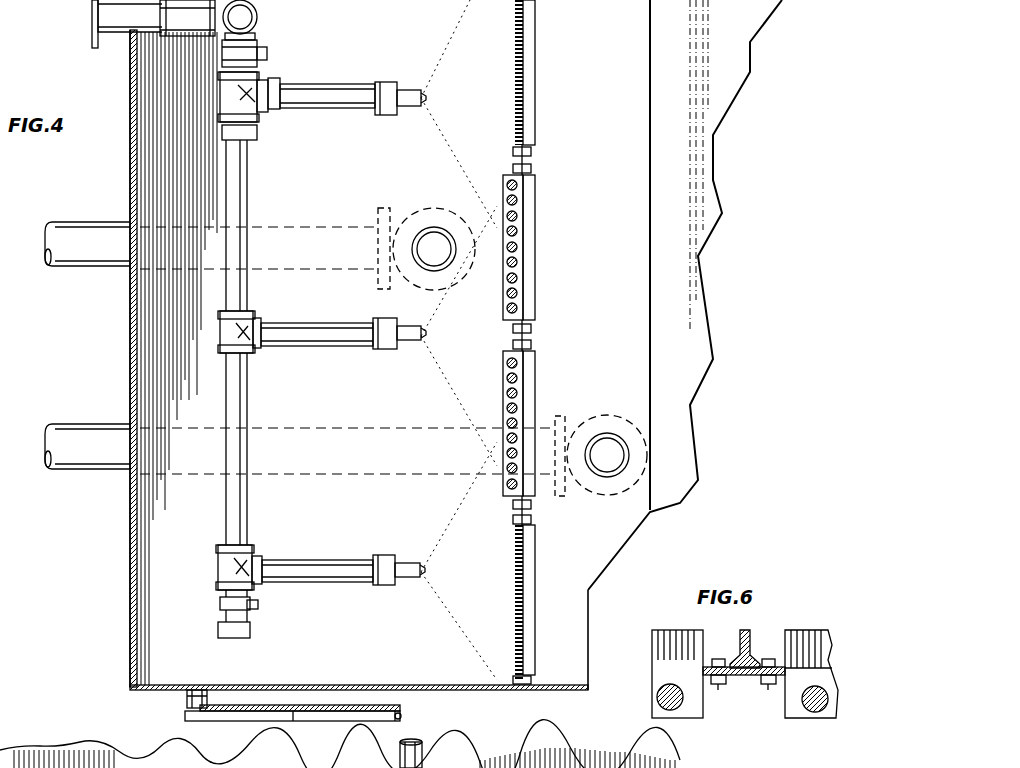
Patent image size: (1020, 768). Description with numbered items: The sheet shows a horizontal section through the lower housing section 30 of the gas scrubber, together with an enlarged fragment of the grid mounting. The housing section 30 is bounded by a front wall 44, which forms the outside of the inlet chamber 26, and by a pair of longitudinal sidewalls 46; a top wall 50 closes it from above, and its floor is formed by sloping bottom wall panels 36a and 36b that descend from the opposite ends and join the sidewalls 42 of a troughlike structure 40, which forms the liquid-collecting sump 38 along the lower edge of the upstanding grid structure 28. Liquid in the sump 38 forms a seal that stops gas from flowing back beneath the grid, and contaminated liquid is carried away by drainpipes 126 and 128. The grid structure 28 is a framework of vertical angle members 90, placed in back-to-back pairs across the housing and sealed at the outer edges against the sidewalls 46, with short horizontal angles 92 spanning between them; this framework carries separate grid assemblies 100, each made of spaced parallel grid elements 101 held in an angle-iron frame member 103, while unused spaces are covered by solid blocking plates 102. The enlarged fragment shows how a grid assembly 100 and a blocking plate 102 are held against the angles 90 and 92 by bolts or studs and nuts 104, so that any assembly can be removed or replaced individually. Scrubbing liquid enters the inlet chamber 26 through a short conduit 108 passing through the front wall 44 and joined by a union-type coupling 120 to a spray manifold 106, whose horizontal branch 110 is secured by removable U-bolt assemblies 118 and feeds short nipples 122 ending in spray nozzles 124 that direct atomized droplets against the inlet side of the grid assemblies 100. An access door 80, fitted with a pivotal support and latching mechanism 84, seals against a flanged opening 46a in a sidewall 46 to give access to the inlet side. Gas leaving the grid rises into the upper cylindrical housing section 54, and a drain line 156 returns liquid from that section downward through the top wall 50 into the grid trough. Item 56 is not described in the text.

In FIG. 4, the inlet chamber 26 is at (340, 417).
In FIG. 4, the upstanding grid structure 28 is at (578, 253).
In FIG. 4, the lower housing section 30 is at (130, 289).
In FIG. 4, the bottom wall panel 36a is at (152, 372).
In FIG. 4, the bottom wall panel 36b is at (693, 330).
In FIG. 4, the liquid-collecting sump 38 is at (620, 329).
In FIG. 4, the troughlike structure 40 is at (465, 672).
In FIG. 4, the sidewall of troughlike structure 42 is at (650, 266).
In FIG. 4, the front wall 44 is at (128, 546).
In FIG. 4, the longitudinal sidewall 46 is at (580, 689).
In FIG. 4, the flanged opening 46a is at (207, 690).
In FIG. 4, the top wall 50 is at (118, 767).
In FIG. 6, the upper cylindrical housing section 54 is at (712, 748).
In FIG. 6, the pipe 56 is at (760, 759).
In FIG. 4, the access door 80 is at (260, 705).
In FIG. 4, the pivotal support and latching mechanism 84 is at (203, 720).
In FIG. 4, the vertical angle member 90 is at (540, 0).
In FIG. 6, the vertical angle member 90 is at (737, 652).
In FIG. 4, the horizontal angle 92 is at (537, 78).
In FIG. 6, the horizontal angle 92 is at (673, 630).
In FIG. 4, the grid assembly 100 is at (500, 299).
In FIG. 6, the grid assembly 100 is at (646, 708).
In FIG. 4, the grid element 101 is at (507, 264).
In FIG. 6, the grid element 101 is at (657, 687).
In FIG. 4, the blocking plate 102 is at (518, 65).
In FIG. 4, the frame member 103 is at (501, 178).
In FIG. 6, the frame member 103 is at (703, 730).
In FIG. 4, the bolts or studs and nuts 104 is at (507, 0).
In FIG. 6, the bolts or studs and nuts 104 is at (718, 690).
In FIG. 4, the spray manifold 106 is at (265, 123).
In FIG. 4, the short conduit 108 is at (112, 13).
In FIG. 4, the upper horizontal branch 110 is at (247, 393).
In FIG. 4, the U-bolt assembly 118 is at (304, 30).
In FIG. 4, the union-type coupling 120 is at (178, 40).
In FIG. 4, the short nipple 122 is at (356, 75).
In FIG. 4, the spray nozzle 124 is at (412, 110).
In FIG. 4, the drainpipe 126 is at (90, 236).
In FIG. 4, the drainpipe 128 is at (88, 464).
In FIG. 4, the drain line 156 is at (423, 743).